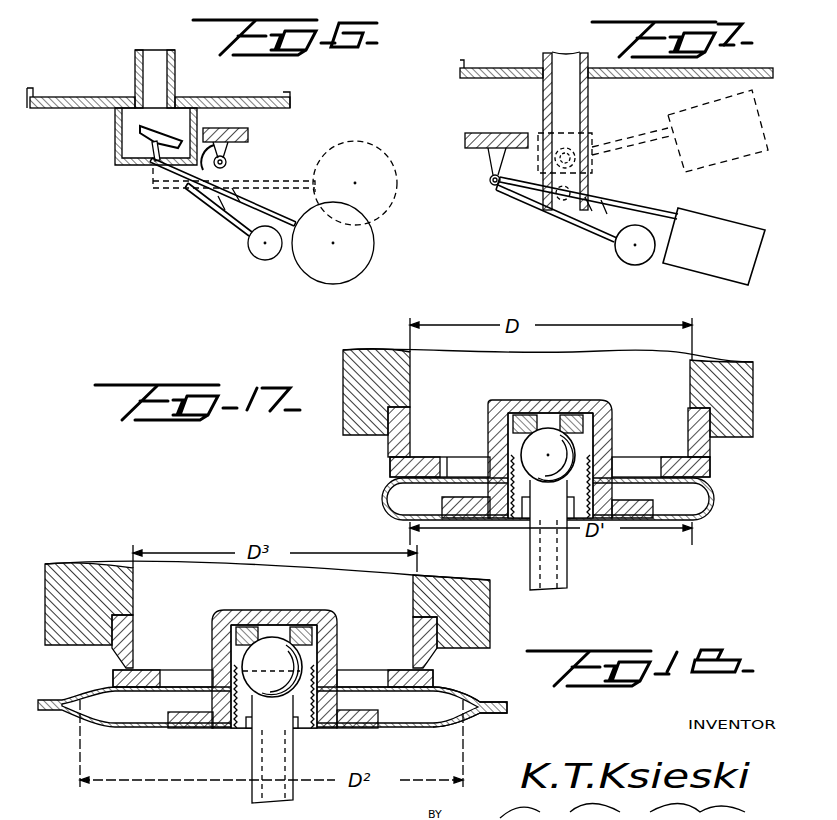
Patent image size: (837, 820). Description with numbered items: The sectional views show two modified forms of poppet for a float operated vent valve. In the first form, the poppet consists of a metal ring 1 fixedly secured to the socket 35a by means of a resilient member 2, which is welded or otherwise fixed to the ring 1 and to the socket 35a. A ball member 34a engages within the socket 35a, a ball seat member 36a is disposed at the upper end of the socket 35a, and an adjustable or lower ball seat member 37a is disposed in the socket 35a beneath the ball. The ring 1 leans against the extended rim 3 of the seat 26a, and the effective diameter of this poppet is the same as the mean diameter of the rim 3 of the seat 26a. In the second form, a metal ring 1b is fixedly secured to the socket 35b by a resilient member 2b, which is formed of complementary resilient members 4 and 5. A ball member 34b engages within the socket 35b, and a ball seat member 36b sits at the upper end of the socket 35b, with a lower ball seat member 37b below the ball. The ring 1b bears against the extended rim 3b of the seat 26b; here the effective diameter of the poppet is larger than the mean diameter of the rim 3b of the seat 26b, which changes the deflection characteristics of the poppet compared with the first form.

In FIG. 17, the metal ring 1 is at (390, 463).
In FIG. 17, the resilient member 2 is at (393, 518).
In FIG. 17, the extended rim 3 is at (412, 457).
In FIG. 17, the seat 26a is at (410, 418).
In FIG. 17, the ball member 34a is at (592, 398).
In FIG. 17, the socket 35a is at (507, 392).
In FIG. 17, the ball seat member 36a is at (530, 417).
In FIG. 17, the adjustable or lower ball seat member 37a is at (518, 510).
In FIG. 18, the ring 1b is at (115, 671).
In FIG. 18, the resilient member 2b is at (70, 710).
In FIG. 18, the extended rim 3b is at (137, 658).
In FIG. 18, the complementary resilient member 4 is at (133, 728).
In FIG. 18, the complementary resilient member 5 is at (463, 694).
In FIG. 18, the seat 26b is at (135, 662).
In FIG. 18, the ball member 34b is at (278, 625).
In FIG. 18, the socket 35b is at (338, 645).
In FIG. 18, the ball seat member 36b is at (272, 645).
In FIG. 18, the stem 37b is at (240, 718).